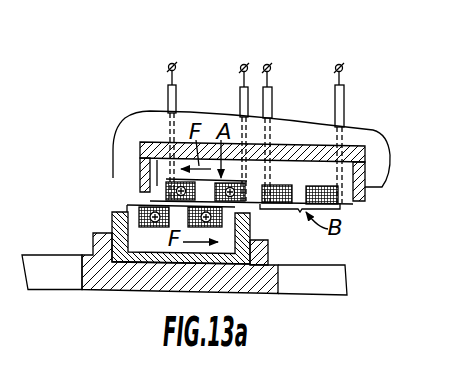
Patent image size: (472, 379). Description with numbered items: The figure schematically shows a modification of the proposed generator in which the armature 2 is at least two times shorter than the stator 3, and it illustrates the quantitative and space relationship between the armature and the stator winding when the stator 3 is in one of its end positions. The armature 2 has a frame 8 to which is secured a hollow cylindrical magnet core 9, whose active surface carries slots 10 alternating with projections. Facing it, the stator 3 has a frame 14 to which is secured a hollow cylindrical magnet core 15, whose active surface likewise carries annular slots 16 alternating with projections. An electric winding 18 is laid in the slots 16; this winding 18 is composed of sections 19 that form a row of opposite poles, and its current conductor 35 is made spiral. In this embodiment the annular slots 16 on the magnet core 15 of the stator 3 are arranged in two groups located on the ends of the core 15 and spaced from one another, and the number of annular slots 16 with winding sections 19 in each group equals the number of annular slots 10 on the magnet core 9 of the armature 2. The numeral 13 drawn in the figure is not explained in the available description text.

The armature 2 is at (281, 274).
The stator 3 is at (140, 118).
The frame 8 is at (111, 220).
The magnet core 9 is at (268, 245).
The slots 10 is at (147, 226).
The carriage plate 13 is at (228, 222).
The frame 14 is at (140, 146).
The magnet core 15 is at (155, 169).
The slots 16 is at (273, 184).
The electric winding 18 is at (318, 184).
The sections 19 is at (162, 190).
The current conductor 35 is at (343, 105).